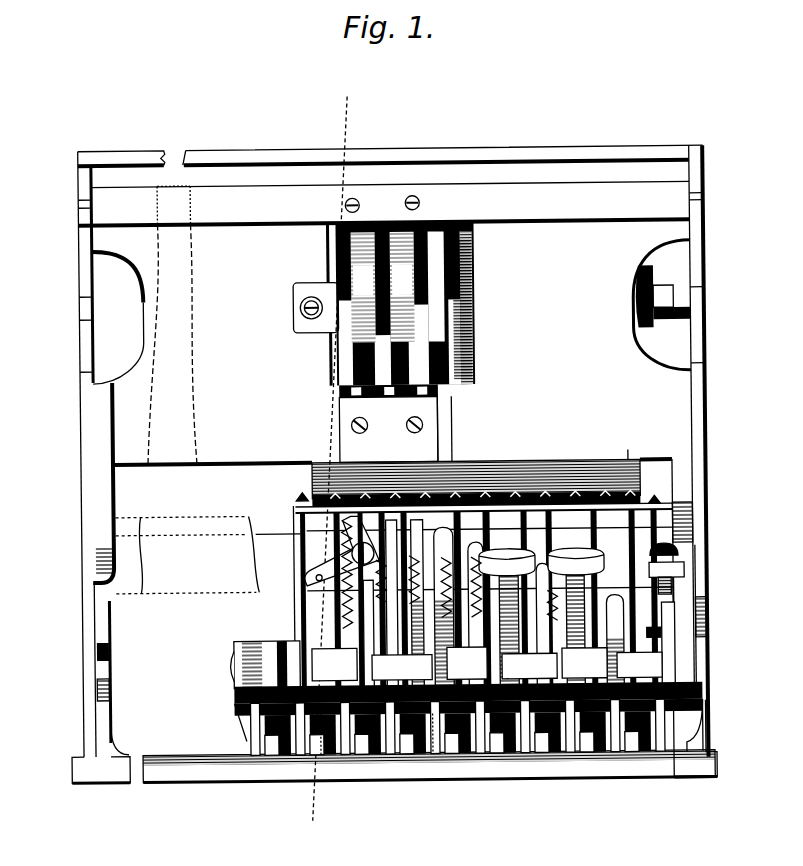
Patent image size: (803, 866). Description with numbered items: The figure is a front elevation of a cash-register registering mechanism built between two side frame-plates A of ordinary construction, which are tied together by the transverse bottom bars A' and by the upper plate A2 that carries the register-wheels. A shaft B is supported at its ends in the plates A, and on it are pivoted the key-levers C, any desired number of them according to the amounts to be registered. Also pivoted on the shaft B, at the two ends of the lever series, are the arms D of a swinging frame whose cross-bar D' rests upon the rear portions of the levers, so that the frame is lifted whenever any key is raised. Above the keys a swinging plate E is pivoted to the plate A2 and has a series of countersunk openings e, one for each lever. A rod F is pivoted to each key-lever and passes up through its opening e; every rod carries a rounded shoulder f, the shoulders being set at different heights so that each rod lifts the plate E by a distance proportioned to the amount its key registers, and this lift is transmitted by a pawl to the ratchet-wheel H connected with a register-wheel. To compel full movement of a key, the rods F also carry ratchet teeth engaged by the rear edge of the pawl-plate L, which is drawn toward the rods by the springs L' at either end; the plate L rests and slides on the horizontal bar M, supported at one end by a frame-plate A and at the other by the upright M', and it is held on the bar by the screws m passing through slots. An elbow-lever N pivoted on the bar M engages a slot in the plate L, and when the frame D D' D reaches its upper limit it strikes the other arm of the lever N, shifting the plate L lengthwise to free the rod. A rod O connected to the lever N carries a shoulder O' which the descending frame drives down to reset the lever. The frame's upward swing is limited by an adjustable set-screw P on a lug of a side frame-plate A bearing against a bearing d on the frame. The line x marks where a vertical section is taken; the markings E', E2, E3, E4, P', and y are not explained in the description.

The side frame-plate A is at (394, 464).
The transverse bottom bar A' is at (429, 778).
The upper plate A2 is at (391, 323).
The shaft B is at (235, 683).
The key-lever C is at (256, 740).
The arm of swinging frame D is at (468, 754).
The cross-bar D' is at (423, 760).
The swinging plate E is at (389, 326).
The register plate E' is at (448, 422).
The register plate E2 is at (388, 430).
The register plate E3 is at (340, 390).
The bracket E4 is at (662, 301).
The opening e is at (488, 428).
The rod F is at (495, 598).
The shoulder f is at (473, 572).
The ratchet-wheel H is at (476, 297).
The pawl-plate L is at (476, 467).
The spring L' is at (473, 491).
The horizontal bar M is at (464, 510).
The upright or standard M' is at (278, 557).
The screw m is at (628, 447).
The elbow-lever N is at (341, 551).
The rod O is at (289, 598).
The shoulder O' is at (338, 758).
The set-screw P is at (668, 614).
The rod P' is at (191, 567).
The bearing d is at (651, 624).
The section line x is at (339, 272).
The axis line y is at (319, 648).